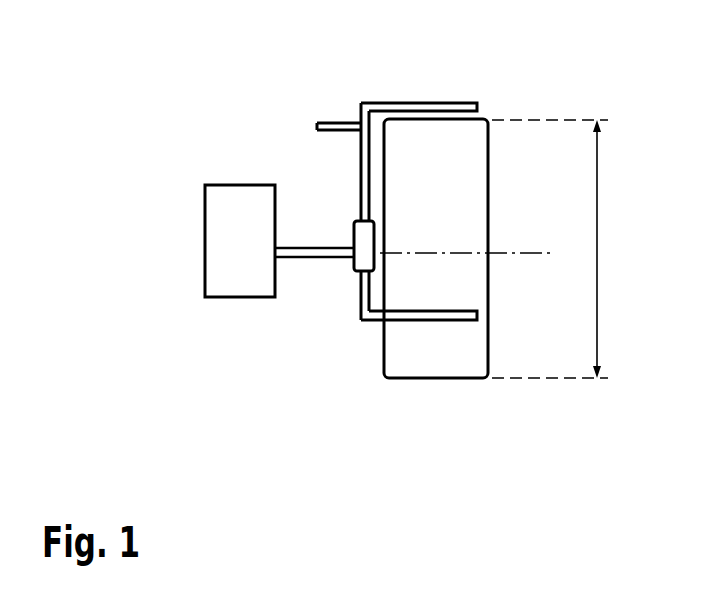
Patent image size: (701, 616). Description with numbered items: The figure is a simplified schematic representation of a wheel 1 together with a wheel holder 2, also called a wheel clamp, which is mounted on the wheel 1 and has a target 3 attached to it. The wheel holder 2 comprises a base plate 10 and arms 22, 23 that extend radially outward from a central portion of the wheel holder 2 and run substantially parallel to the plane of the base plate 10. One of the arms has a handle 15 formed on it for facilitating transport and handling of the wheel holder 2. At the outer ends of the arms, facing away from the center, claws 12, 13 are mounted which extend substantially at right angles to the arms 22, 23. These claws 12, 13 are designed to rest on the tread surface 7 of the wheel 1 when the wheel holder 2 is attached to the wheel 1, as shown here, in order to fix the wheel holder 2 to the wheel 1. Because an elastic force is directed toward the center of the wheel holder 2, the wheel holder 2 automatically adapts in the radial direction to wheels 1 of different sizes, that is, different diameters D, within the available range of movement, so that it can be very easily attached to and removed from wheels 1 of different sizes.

The wheel 1 is at (513, 292).
The wheel holder 2 is at (290, 373).
The target 3 is at (217, 247).
The tread surface 7 is at (473, 148).
The base plate 10 is at (357, 225).
The claw 12 is at (474, 92).
The claw 13 is at (372, 332).
The handle 15 is at (331, 106).
The arm 22 is at (361, 158).
The arm 23 is at (363, 305).
The diameter D is at (560, 249).